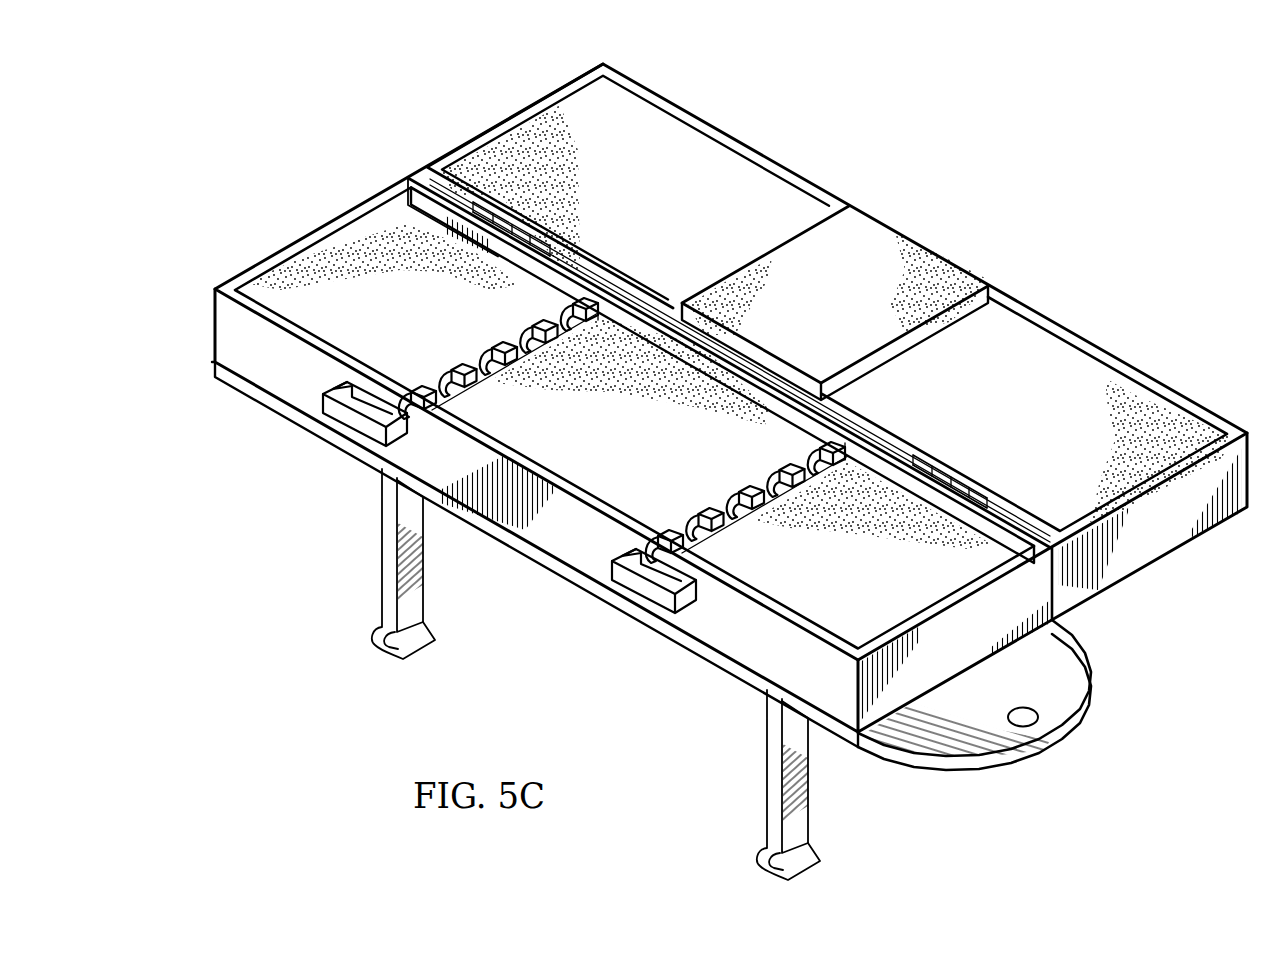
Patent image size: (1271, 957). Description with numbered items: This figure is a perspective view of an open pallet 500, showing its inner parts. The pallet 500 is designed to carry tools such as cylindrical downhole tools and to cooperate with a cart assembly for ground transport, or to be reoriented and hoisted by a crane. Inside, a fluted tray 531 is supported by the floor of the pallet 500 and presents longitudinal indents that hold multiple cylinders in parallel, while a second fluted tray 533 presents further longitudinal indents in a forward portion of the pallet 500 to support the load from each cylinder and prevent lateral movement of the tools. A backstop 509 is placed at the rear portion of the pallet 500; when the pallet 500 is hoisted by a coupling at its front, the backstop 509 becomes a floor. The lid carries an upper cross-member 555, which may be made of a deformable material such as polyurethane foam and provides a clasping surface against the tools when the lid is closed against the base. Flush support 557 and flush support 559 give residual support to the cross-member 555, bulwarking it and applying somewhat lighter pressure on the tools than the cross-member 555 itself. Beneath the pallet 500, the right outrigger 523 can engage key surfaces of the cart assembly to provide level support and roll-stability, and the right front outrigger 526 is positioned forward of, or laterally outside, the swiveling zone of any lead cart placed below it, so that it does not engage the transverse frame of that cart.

The pallet 500 is at (356, 84).
The backstop 509 is at (327, 245).
The flush support 557 is at (738, 167).
The upper cross-member 555 is at (873, 230).
The flush support 559 is at (1062, 355).
The fluted tray 531 is at (503, 343).
The fluted tray 533 is at (750, 485).
The right outrigger 523 is at (383, 548).
The right front outrigger 526 is at (766, 773).